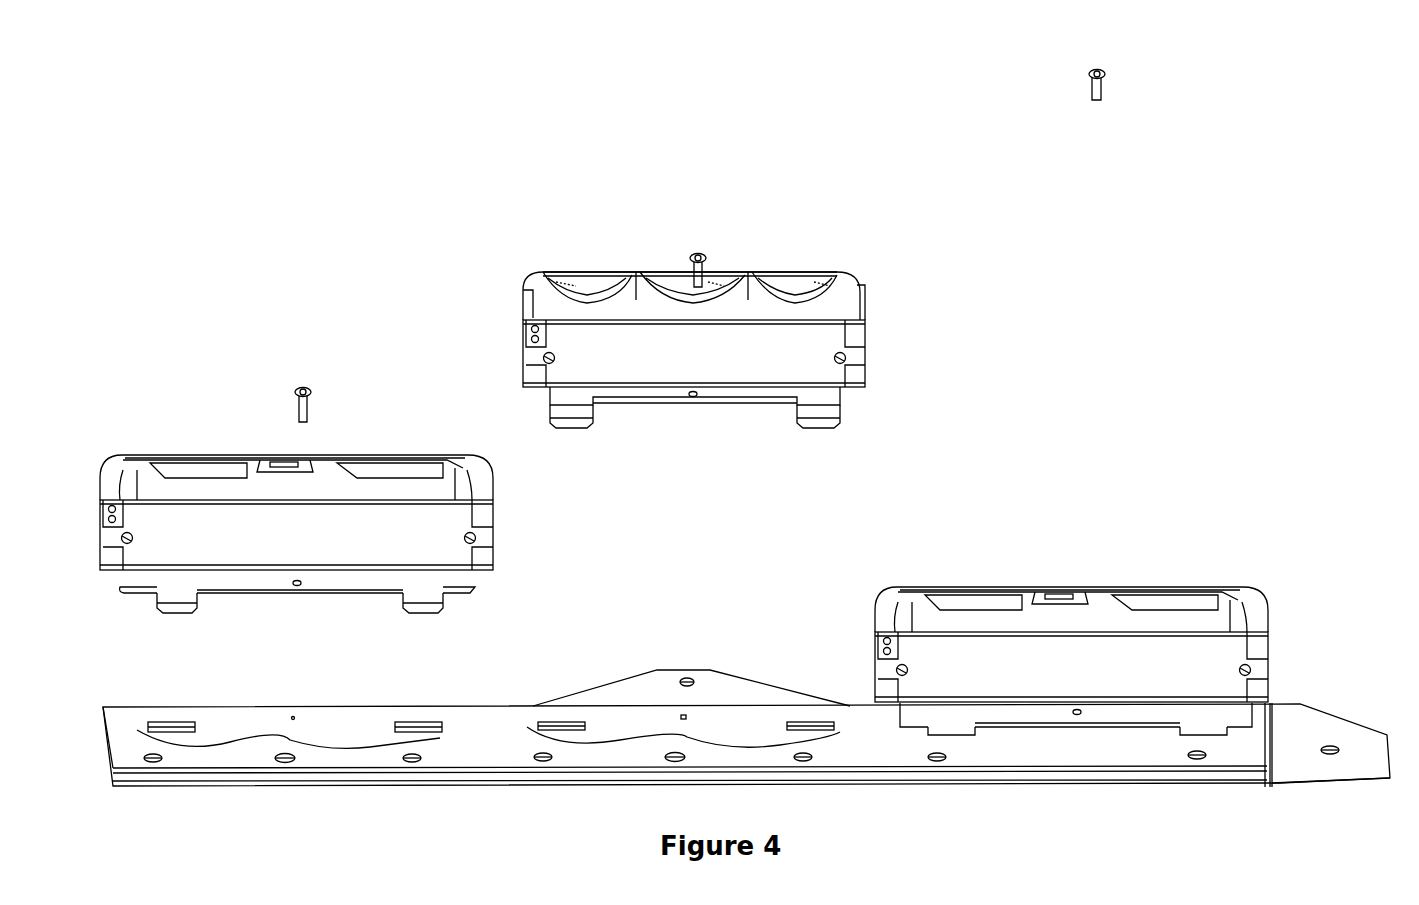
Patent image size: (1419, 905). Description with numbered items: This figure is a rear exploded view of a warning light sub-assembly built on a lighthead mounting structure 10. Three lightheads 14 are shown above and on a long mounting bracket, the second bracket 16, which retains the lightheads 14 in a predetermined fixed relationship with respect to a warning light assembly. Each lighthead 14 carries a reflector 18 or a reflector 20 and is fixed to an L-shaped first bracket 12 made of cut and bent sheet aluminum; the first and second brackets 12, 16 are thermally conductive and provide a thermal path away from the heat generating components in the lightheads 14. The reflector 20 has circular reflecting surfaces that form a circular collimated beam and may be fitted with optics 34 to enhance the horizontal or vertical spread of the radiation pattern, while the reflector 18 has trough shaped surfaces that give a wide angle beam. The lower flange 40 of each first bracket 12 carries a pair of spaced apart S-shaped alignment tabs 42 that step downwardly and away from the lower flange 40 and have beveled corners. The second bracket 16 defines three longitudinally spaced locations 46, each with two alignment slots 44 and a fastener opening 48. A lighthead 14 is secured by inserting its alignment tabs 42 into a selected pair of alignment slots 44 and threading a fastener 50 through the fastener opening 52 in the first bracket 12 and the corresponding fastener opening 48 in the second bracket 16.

The lighthead mounting structure 10 is at (1127, 678).
The first bracket 12 is at (463, 585).
The lighthead 14 is at (207, 467).
The second bracket 16 is at (860, 777).
The reflector 18 is at (377, 467).
The reflector 20 is at (637, 298).
The optics 34 is at (787, 273).
The lower flange 40 is at (143, 578).
The alignment tab 42 is at (170, 613).
The alignment slot 44 is at (172, 722).
The location for a lighthead 46 is at (290, 740).
The fastener opening 48 is at (293, 718).
The fastener 50 is at (1088, 72).
The fastener opening 52 is at (297, 585).